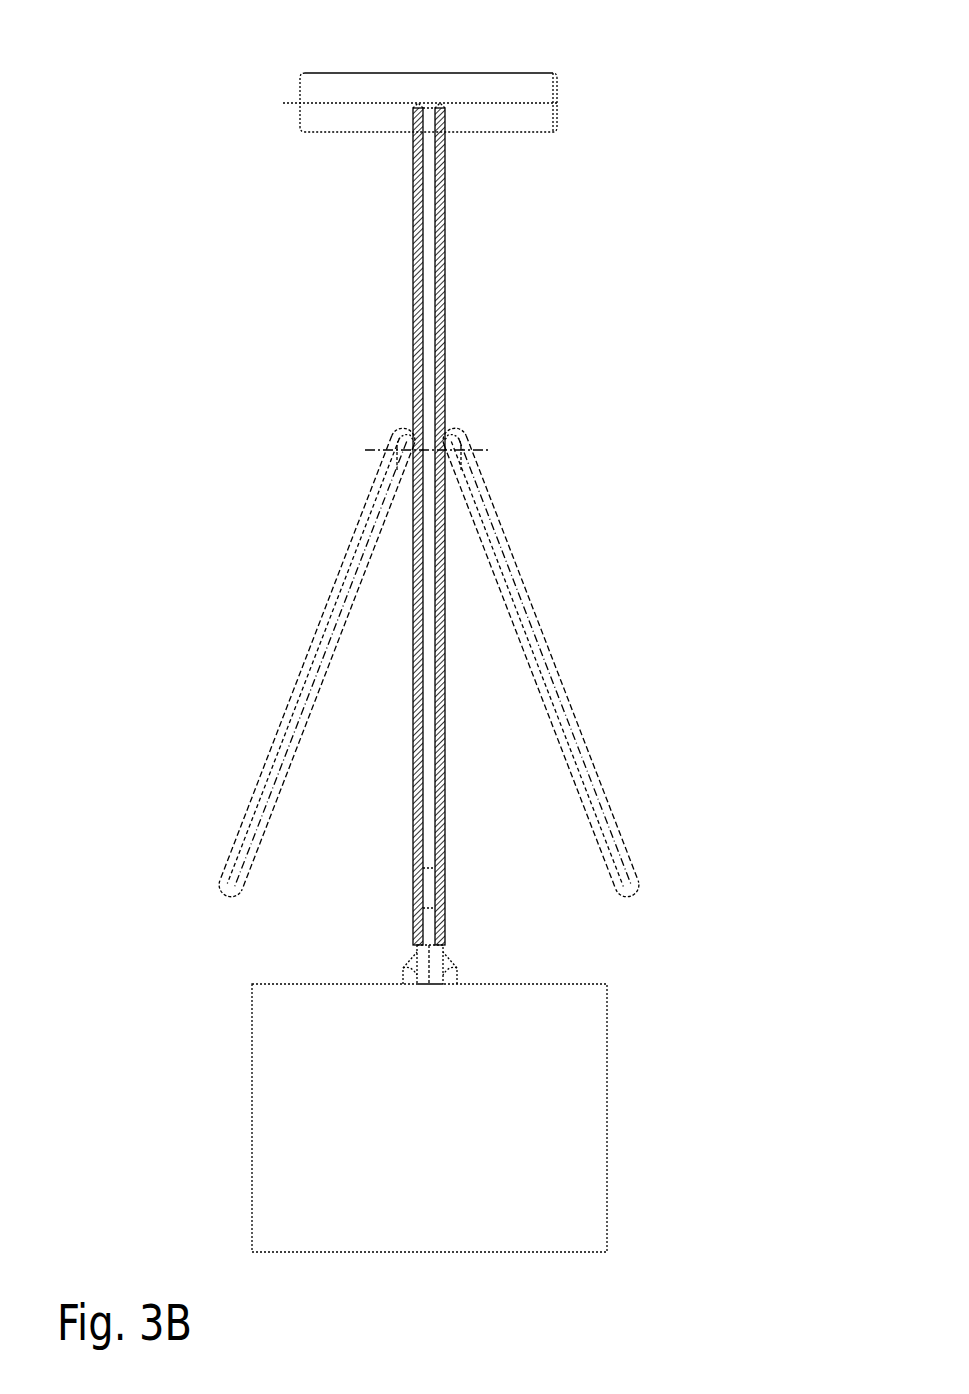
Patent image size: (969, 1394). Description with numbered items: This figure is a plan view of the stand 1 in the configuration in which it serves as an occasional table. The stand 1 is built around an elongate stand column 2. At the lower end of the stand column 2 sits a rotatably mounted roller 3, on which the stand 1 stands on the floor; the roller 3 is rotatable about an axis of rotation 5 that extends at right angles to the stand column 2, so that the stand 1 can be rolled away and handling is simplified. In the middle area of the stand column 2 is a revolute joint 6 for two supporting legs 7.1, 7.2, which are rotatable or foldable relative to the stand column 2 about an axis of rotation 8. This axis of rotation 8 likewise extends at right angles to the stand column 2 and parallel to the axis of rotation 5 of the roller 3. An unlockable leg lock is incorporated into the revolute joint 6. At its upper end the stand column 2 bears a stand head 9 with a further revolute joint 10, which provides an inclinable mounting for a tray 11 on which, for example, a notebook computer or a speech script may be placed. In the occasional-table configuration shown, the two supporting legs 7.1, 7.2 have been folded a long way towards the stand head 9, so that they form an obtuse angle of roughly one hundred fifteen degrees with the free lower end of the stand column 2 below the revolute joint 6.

The stand 1 is at (228, 130).
The stand column 2 is at (428, 320).
The roller 3 is at (437, 81).
The axis of rotation 5 is at (558, 103).
The revolute joint 6 is at (388, 440).
The axis of rotation 8 is at (470, 450).
The supporting leg 7.1 is at (573, 748).
The supporting leg 7.2 is at (333, 628).
The stand head 9 is at (430, 908).
The further revolute joint 10 is at (443, 963).
The tray 11 is at (582, 1070).